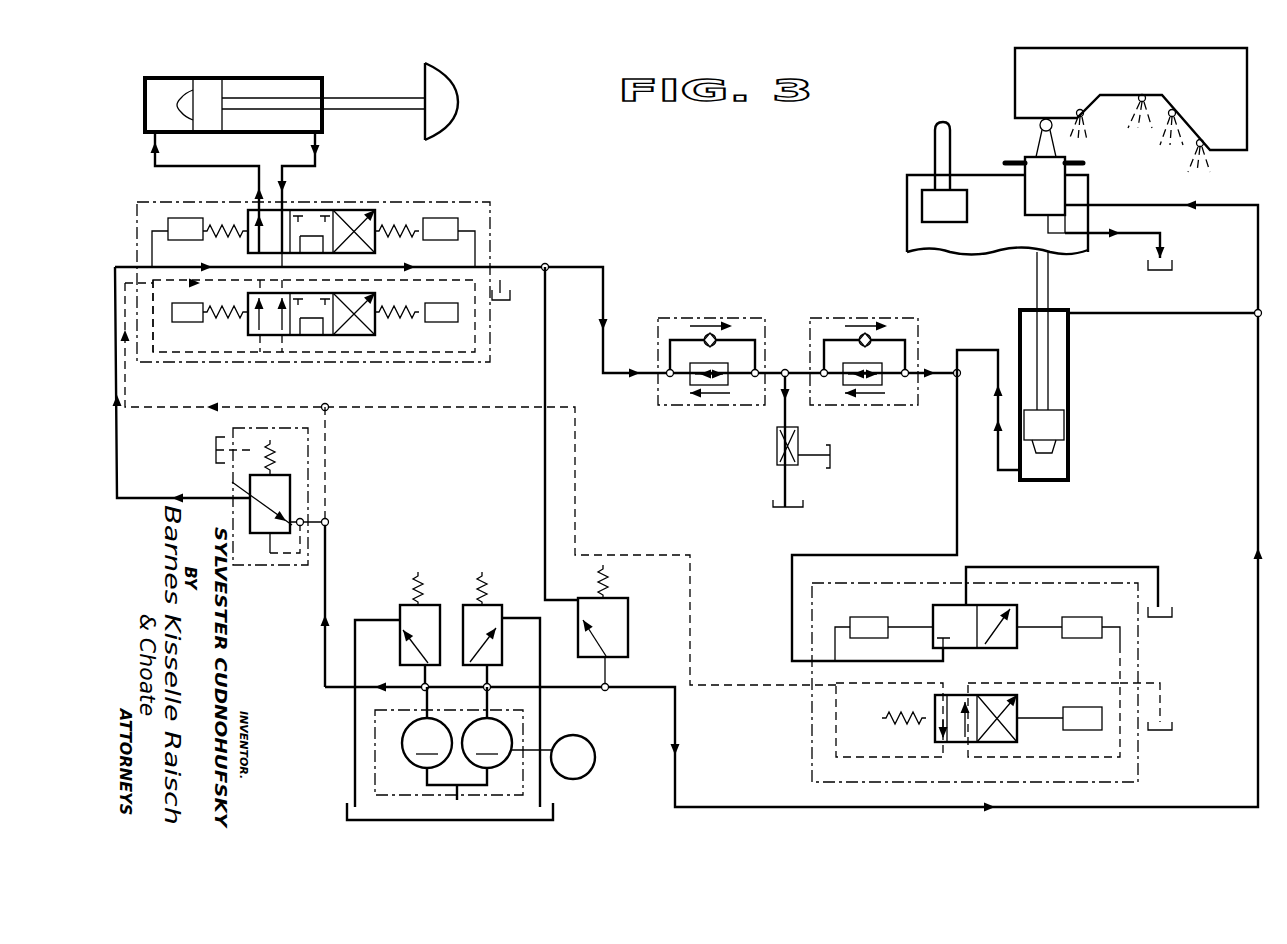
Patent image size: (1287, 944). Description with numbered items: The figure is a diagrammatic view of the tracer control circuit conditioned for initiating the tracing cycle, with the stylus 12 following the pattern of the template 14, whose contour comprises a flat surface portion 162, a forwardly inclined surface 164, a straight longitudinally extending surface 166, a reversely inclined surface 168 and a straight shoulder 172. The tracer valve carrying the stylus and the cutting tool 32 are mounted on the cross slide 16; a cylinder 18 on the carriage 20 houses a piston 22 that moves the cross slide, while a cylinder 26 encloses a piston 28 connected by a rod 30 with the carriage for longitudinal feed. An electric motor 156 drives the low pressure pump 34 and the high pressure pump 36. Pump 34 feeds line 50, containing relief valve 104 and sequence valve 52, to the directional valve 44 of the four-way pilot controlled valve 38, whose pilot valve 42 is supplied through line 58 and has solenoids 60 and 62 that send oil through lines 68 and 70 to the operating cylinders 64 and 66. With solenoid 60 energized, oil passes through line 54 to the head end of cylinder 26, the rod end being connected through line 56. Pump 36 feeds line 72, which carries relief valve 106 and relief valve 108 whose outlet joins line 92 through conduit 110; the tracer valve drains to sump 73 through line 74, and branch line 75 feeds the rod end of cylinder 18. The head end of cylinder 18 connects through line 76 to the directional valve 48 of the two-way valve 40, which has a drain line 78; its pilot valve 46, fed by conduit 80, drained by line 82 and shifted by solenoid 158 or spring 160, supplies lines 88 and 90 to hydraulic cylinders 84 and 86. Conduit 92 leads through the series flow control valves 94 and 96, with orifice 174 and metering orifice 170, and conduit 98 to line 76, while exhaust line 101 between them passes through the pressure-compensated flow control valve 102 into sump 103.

The stylus 12 is at (1062, 145).
The template 14 is at (1015, 60).
The cross slide 16 is at (908, 213).
The cylinder 18 is at (1070, 385).
The carriage 20 is at (457, 108).
The piston 22 is at (1060, 428).
The cylinder 26 is at (282, 72).
The piston 28 is at (207, 88).
The rod 30 is at (380, 98).
The cutting tool 32 is at (945, 124).
The low pressure pump 34 is at (449, 743).
The high pressure pump 36 is at (487, 727).
The pilot controlled valve 38 is at (492, 236).
The pilot controlled valve 40 is at (1145, 670).
The pilot valve 42 is at (352, 337).
The directional valve 44 is at (303, 210).
The pilot valve 46 is at (935, 737).
The directional valve 48 is at (1012, 613).
The line 50 is at (120, 482).
The sequence valve 52 is at (252, 490).
The line 54 is at (208, 158).
The line 56 is at (318, 158).
The line 58 is at (237, 407).
The solenoid 60 is at (190, 322).
The solenoid 62 is at (432, 322).
The operating cylinder 64 is at (184, 218).
The operating cylinder 66 is at (442, 218).
The line 68 is at (160, 338).
The line 70 is at (478, 345).
The line 72 is at (1257, 455).
The sump 73 is at (1158, 268).
The line 74 is at (1105, 232).
The branch line 75 is at (1200, 315).
The line 76 is at (993, 380).
The drain line 78 is at (1073, 567).
The branch conduit 80 is at (430, 407).
The drain line 82 is at (1165, 702).
The hydraulic cylinder 84 is at (872, 617).
The hydraulic cylinder 86 is at (1085, 617).
The line 88 is at (838, 740).
The line 90 is at (1118, 647).
The conduit 92 is at (545, 263).
The flow control valve 94 is at (772, 318).
The flow control valve 96 is at (920, 324).
The conduit 98 is at (937, 368).
The exhaust line 101 is at (790, 415).
The flow control valve 102 is at (776, 448).
The sump 103 is at (785, 508).
The relief valve 104 is at (436, 605).
The relief valve 106 is at (520, 592).
The relief valve 108 is at (630, 645).
The conduit 110 is at (542, 470).
The electric motor 156 is at (582, 745).
The solenoid 158 is at (1088, 700).
The spring 160 is at (882, 718).
The flat surface portion 162 is at (1030, 118).
The forwardly inclined surface 164 is at (1078, 109).
The straight longitudinally extending surface 166 is at (1142, 94).
The reversely inclined surface 168 is at (1176, 110).
The metering orifice 170 is at (875, 382).
The straight shoulder 172 is at (1203, 148).
The orifice 174 is at (695, 380).